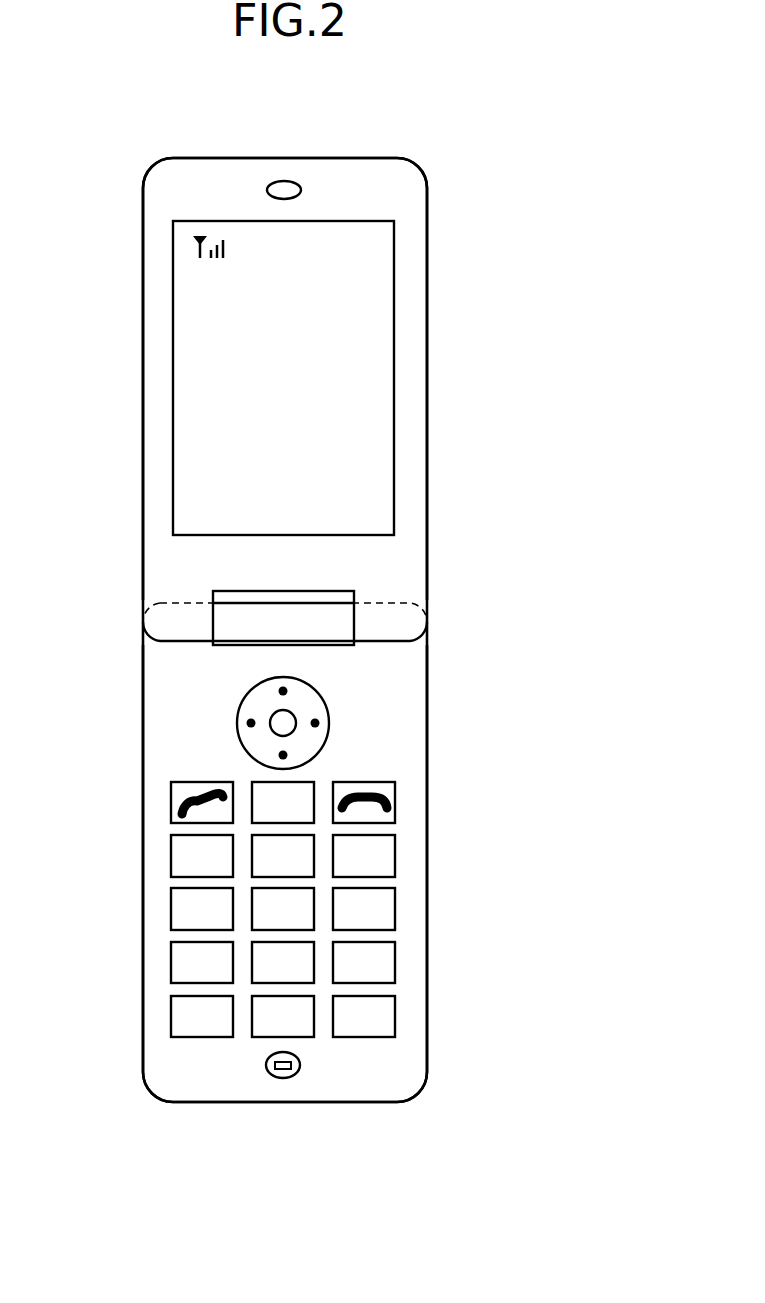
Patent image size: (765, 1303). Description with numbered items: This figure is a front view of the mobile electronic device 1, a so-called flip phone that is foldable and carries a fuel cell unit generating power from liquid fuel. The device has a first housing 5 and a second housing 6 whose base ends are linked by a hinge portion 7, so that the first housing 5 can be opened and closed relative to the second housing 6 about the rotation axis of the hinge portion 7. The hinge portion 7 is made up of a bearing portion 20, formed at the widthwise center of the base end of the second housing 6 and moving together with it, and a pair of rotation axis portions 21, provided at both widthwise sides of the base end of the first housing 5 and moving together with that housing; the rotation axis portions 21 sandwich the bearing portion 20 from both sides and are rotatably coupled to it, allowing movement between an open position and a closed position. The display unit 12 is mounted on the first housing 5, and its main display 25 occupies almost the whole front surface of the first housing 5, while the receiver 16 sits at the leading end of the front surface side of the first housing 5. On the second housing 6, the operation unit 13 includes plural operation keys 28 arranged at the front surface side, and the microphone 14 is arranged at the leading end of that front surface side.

The mobile electronic device 1 is at (448, 128).
The first housing 5 is at (153, 160).
The second housing 6 is at (183, 1104).
The hinge portion 7 is at (278, 654).
The display unit 12 is at (358, 378).
The operation unit 13 is at (359, 909).
The microphone 14 is at (283, 1078).
The receiver 16 is at (280, 181).
The bearing portion 20 is at (297, 638).
The rotation axis portions 21 is at (178, 622).
The main display 25 is at (396, 366).
The operation keys 28 is at (396, 910).